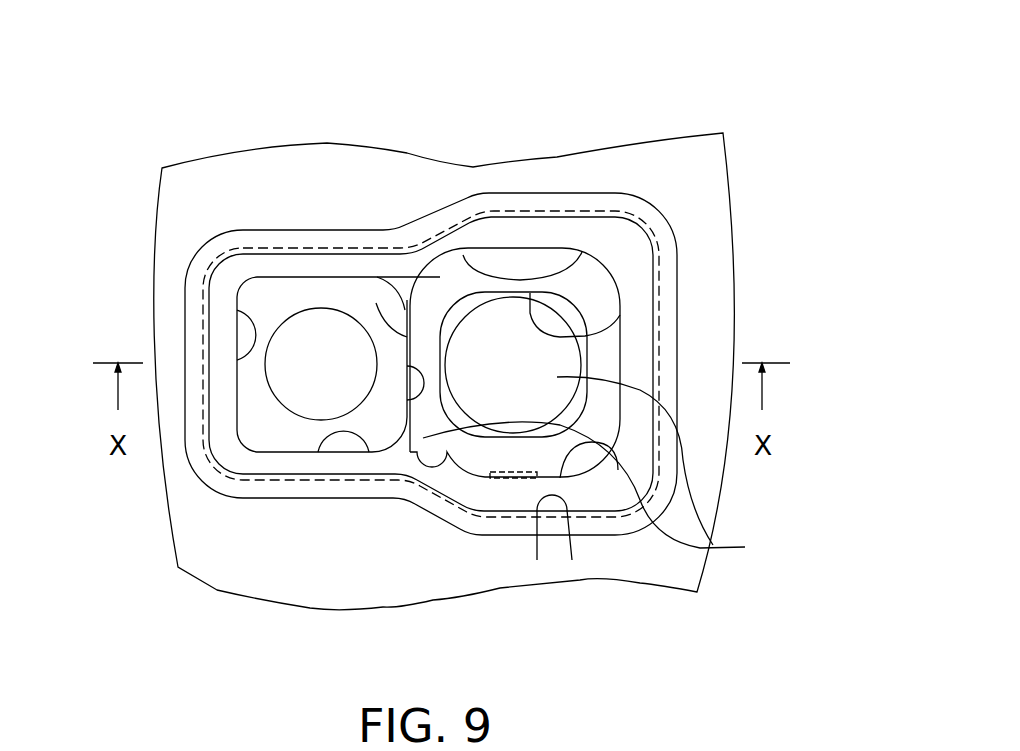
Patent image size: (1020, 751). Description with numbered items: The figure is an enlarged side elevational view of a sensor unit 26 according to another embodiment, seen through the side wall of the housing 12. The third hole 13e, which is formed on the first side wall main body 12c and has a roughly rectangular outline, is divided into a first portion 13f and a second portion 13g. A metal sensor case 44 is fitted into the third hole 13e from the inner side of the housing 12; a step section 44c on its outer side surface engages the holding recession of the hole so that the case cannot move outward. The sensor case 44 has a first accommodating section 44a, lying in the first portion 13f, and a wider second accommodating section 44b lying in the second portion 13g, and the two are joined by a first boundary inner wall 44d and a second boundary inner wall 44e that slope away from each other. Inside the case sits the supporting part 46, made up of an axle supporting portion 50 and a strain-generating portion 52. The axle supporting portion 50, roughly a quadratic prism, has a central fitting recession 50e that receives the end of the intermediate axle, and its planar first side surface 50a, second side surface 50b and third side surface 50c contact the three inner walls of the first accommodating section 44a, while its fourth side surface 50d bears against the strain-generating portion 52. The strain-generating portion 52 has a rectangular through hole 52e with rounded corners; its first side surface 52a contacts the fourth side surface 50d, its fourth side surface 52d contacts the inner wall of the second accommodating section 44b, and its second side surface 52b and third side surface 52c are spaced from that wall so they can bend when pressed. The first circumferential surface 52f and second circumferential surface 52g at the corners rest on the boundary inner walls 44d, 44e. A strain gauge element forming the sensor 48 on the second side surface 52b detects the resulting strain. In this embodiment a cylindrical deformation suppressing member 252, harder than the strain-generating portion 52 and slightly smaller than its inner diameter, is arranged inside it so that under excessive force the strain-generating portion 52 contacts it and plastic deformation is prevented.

The housing 12 is at (140, 242).
The first side wall main body 12c is at (325, 168).
The third hole 13e is at (313, 237).
The first portion 13f is at (307, 478).
The second portion 13g is at (572, 560).
The sensor unit 26 is at (603, 172).
The sensor case 44 is at (447, 275).
The first accommodating section 44a is at (237, 355).
The second accommodating section 44b is at (598, 500).
The step section 44c is at (268, 480).
The first boundary inner wall 44d is at (700, 548).
The second boundary inner wall 44e is at (590, 282).
The supporting part 46 is at (378, 655).
The sensor 48 is at (507, 455).
The axle supporting portion 50 is at (218, 262).
The first side surface 50a is at (245, 437).
The second side surface 50b is at (373, 453).
The third side surface 50c is at (336, 308).
The fourth side surface 50d is at (383, 430).
The fitting recession 50e is at (265, 367).
The strain-generating portion 52 is at (510, 247).
The first side surface 52a is at (378, 277).
The second side surface 52b is at (537, 560).
The third side surface 52c is at (537, 282).
The fourth side surface 52d is at (620, 350).
The through hole 52e is at (595, 333).
The first circumferential surface 52f is at (400, 460).
The second circumferential surface 52g is at (487, 183).
The deformation suppressing member 252 is at (690, 492).